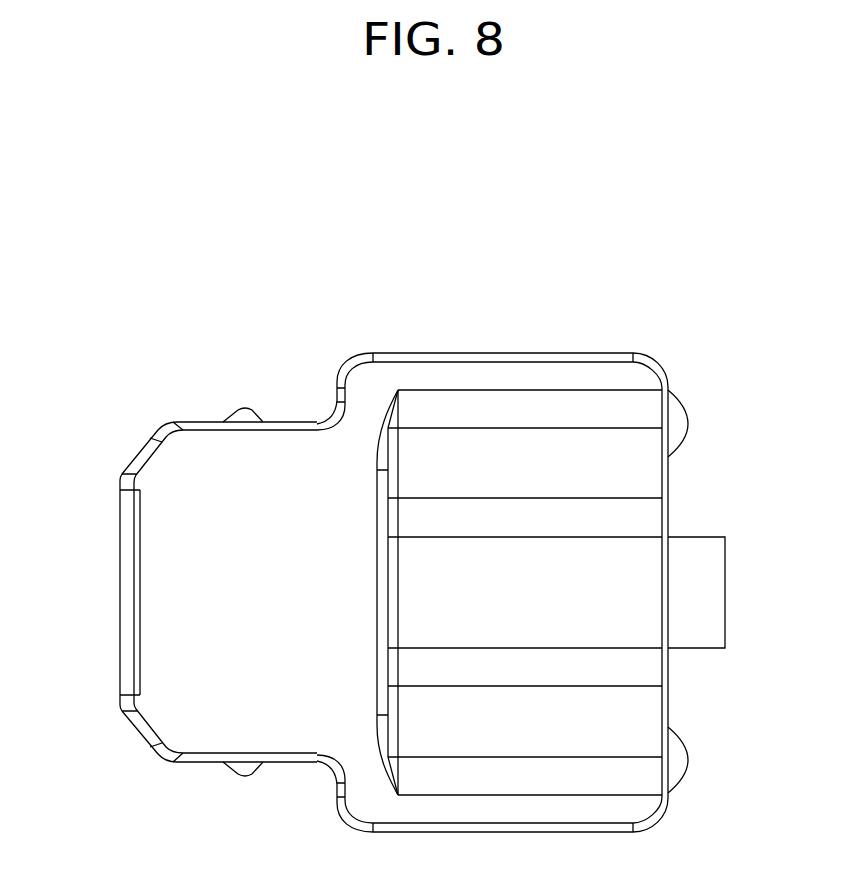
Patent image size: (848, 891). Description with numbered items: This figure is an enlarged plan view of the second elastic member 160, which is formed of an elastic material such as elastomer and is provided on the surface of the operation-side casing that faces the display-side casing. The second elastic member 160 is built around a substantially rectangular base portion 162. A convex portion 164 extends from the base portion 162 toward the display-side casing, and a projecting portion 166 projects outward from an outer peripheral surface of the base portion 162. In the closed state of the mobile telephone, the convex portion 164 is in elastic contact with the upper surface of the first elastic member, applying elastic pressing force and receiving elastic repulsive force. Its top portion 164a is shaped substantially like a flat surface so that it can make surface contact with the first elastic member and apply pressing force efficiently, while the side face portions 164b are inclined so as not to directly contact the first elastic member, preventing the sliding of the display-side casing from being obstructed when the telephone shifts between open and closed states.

The second elastic member 160 is at (145, 350).
The base portion 162 is at (517, 353).
The convex portion 164 is at (400, 588).
The top portion 164a is at (612, 606).
The side face portions 164b is at (565, 473).
The projecting portion 166 is at (175, 596).